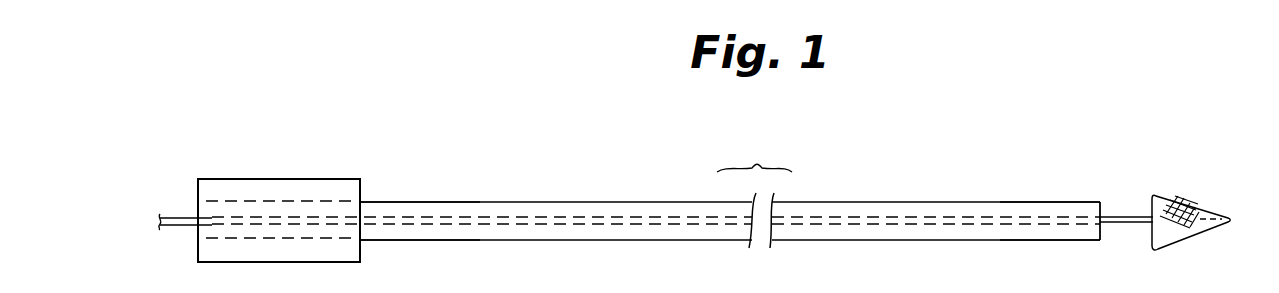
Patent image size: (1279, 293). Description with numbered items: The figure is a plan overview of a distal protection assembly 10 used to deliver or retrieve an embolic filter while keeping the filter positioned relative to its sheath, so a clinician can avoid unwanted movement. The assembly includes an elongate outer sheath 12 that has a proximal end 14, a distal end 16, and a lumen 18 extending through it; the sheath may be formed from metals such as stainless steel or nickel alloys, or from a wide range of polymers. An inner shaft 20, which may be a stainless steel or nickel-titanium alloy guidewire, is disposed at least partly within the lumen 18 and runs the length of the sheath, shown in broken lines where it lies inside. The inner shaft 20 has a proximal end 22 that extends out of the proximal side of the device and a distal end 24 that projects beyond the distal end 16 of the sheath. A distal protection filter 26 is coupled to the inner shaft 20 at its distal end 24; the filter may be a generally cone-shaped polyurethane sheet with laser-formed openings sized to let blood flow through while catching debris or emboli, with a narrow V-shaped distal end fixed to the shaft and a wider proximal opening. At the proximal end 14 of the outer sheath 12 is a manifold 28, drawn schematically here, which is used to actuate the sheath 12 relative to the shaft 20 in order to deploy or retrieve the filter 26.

The distal protection assembly 10 is at (542, 180).
The outer sheath 12 is at (677, 205).
The proximal end of outer sheath 14 is at (383, 203).
The distal end of outer sheath 16 is at (1043, 202).
The lumen 18 is at (1103, 213).
The inner shaft 20 is at (593, 215).
The proximal end of inner shaft 22 is at (175, 218).
The distal end of inner shaft 24 is at (1130, 217).
The distal protection filter 26 is at (1185, 205).
The manifold 28 is at (257, 179).